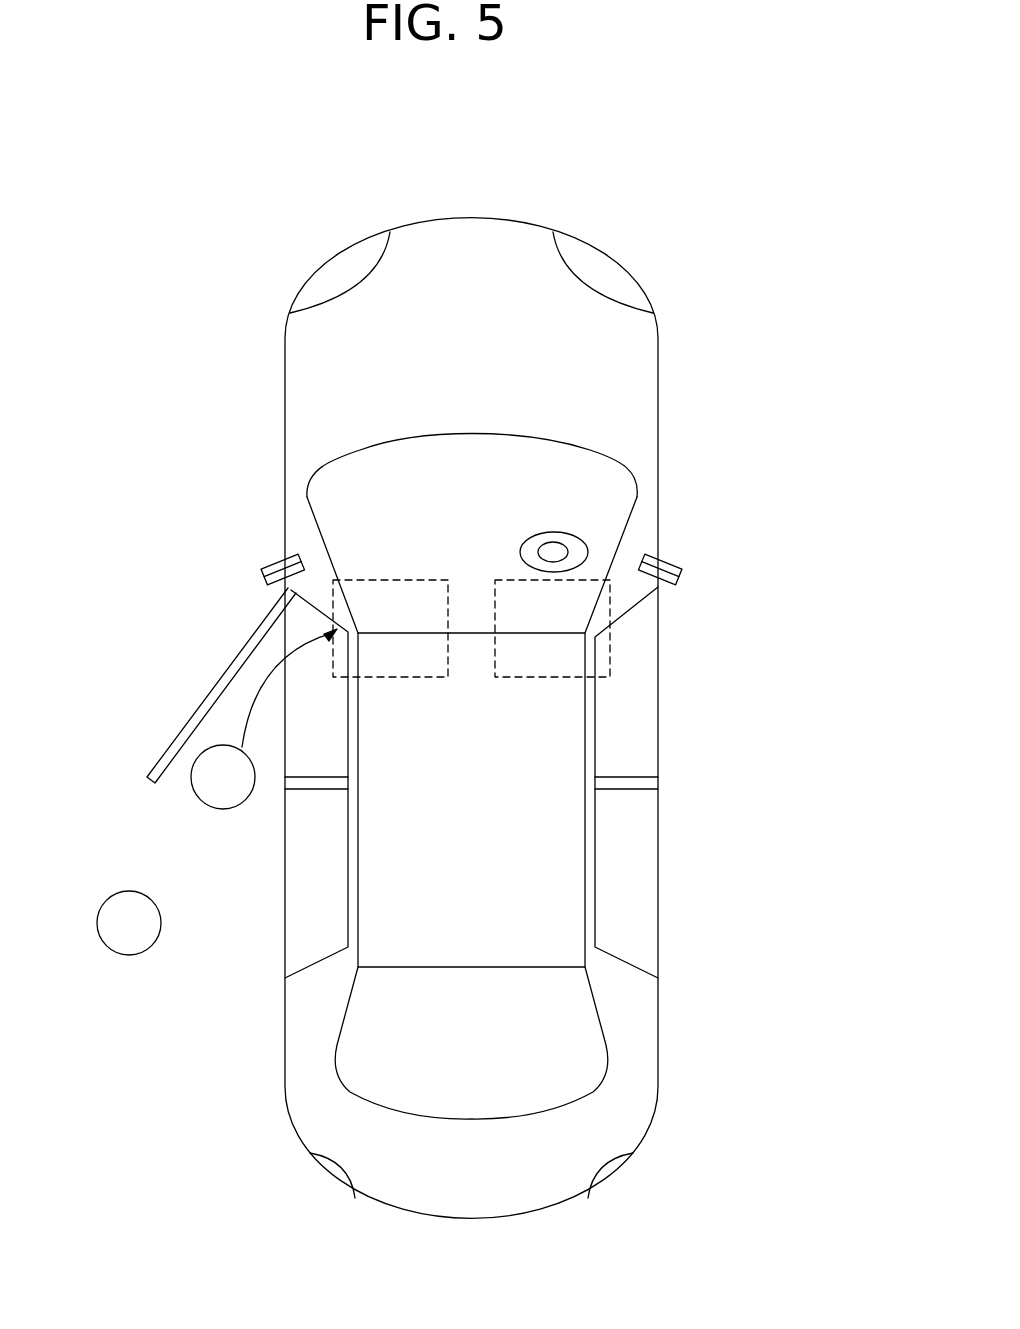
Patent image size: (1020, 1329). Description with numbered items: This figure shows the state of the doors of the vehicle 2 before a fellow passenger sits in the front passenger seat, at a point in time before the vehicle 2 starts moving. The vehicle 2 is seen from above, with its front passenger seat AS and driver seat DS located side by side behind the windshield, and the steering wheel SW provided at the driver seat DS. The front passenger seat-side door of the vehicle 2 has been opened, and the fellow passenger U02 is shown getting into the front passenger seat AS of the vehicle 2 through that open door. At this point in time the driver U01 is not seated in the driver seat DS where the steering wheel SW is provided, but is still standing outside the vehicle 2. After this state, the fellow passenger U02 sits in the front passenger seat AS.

The vehicle 2 is at (517, 218).
The steering wheel SW is at (587, 545).
The front passenger seat AS is at (388, 578).
The driver seat DS is at (613, 647).
The driver U01 is at (122, 956).
The fellow passenger U02 is at (220, 745).